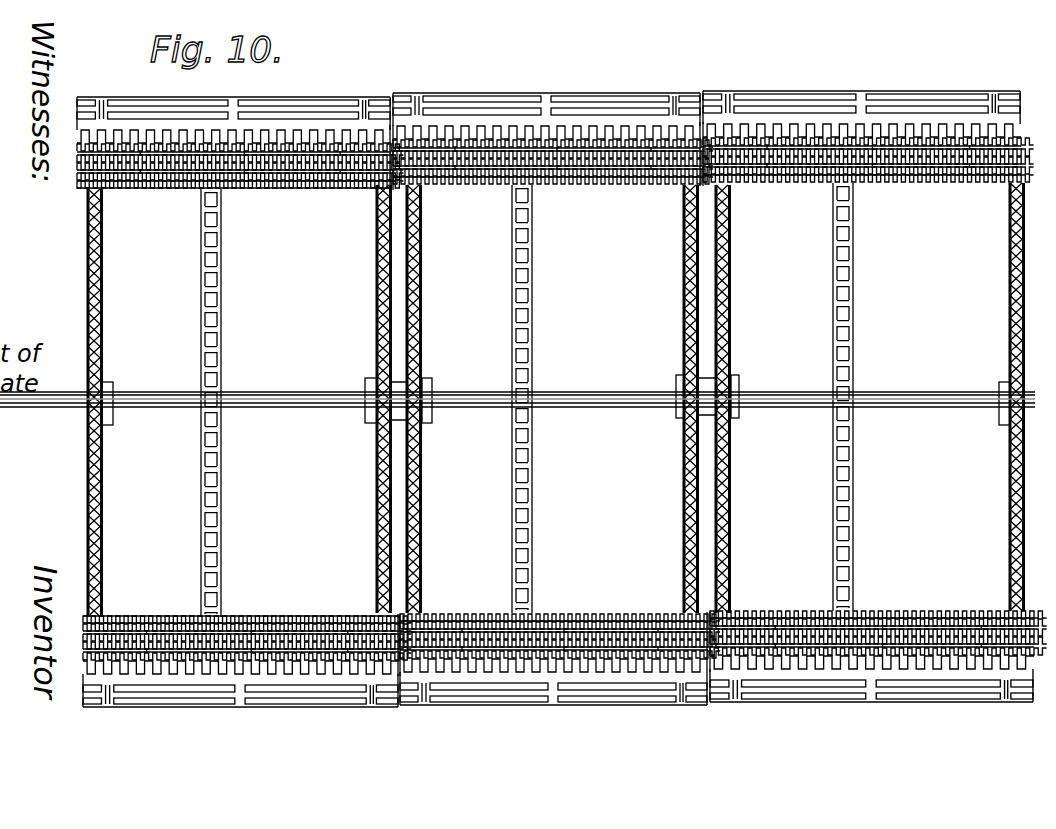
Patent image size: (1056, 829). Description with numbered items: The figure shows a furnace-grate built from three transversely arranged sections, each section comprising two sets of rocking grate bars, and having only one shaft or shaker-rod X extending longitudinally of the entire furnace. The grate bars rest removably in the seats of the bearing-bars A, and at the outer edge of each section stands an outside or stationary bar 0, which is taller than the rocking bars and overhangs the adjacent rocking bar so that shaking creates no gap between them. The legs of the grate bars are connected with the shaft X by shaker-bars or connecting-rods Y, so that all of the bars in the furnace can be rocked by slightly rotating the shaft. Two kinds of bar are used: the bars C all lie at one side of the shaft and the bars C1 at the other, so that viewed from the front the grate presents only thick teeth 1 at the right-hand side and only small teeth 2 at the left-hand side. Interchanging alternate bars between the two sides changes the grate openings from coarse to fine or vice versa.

The outside or stationary bar 0 is at (265, 106).
The thick tooth 1 is at (702, 138).
The small tooth 2 is at (398, 142).
The grate-bar C is at (296, 622).
The grate-bar C1 is at (306, 190).
The bearing-bar A is at (102, 332).
The shaker-bar or connecting-rod Y is at (222, 474).
The shaft or shaker-rod X is at (36, 406).